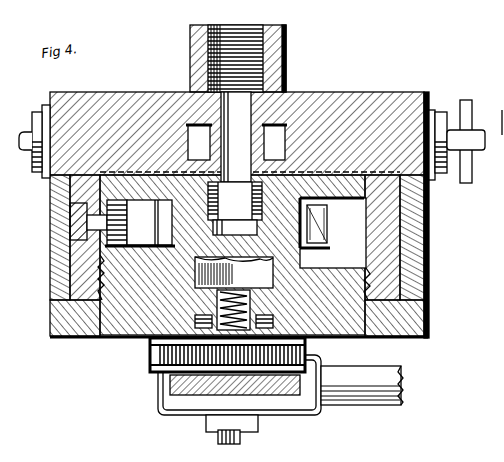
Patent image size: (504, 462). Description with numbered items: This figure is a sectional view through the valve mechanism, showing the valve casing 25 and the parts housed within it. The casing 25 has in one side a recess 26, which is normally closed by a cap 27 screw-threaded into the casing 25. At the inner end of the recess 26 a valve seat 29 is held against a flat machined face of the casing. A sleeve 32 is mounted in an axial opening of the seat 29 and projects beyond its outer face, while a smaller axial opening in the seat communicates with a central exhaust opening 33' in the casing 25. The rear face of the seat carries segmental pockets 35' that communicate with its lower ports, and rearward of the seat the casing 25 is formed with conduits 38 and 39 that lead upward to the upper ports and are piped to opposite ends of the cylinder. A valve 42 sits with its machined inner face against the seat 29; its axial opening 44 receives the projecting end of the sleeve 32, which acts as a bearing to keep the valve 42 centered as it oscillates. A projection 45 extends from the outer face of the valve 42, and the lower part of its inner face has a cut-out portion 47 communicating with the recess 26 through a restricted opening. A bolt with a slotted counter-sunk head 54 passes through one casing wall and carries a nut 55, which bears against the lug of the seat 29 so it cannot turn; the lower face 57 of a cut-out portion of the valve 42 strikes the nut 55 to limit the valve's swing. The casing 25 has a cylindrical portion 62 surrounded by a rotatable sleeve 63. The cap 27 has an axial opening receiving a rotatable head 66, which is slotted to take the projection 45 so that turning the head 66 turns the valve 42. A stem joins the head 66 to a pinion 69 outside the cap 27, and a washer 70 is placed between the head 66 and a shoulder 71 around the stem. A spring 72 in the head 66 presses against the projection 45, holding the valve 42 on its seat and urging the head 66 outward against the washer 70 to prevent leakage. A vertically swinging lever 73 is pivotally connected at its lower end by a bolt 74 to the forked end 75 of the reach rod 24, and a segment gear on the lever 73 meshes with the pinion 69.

The valve casing 25 is at (400, 87).
The recess 26 is at (401, 210).
The cap 27 is at (428, 326).
The valve seat 29 is at (447, 158).
The sleeve 32 is at (235, 208).
The central exhaust opening 33' is at (264, 103).
The segmental pockets 35' is at (27, 156).
The conduit 38 is at (276, 130).
The conduit 39 is at (196, 128).
The valve 42 is at (327, 233).
The axial opening 44 is at (320, 216).
The projection 45 is at (302, 264).
The cut-out portion 47 is at (496, 260).
The slotted counter-sunk head 54 is at (76, 224).
The nut 55 is at (116, 245).
The lower face 57 is at (145, 235).
The cylindrical portion 62 is at (395, 225).
The rotatable sleeve 63 is at (50, 275).
The rotatable head 66 is at (150, 337).
The pinion 69 is at (165, 368).
The washer 70 is at (338, 339).
The shoulder 71 is at (160, 356).
The spring 72 is at (232, 272).
The vertically swinging lever 73 is at (193, 395).
The bolt 74 is at (242, 438).
The forked end 75 is at (314, 416).
The reach rod 24 is at (403, 392).